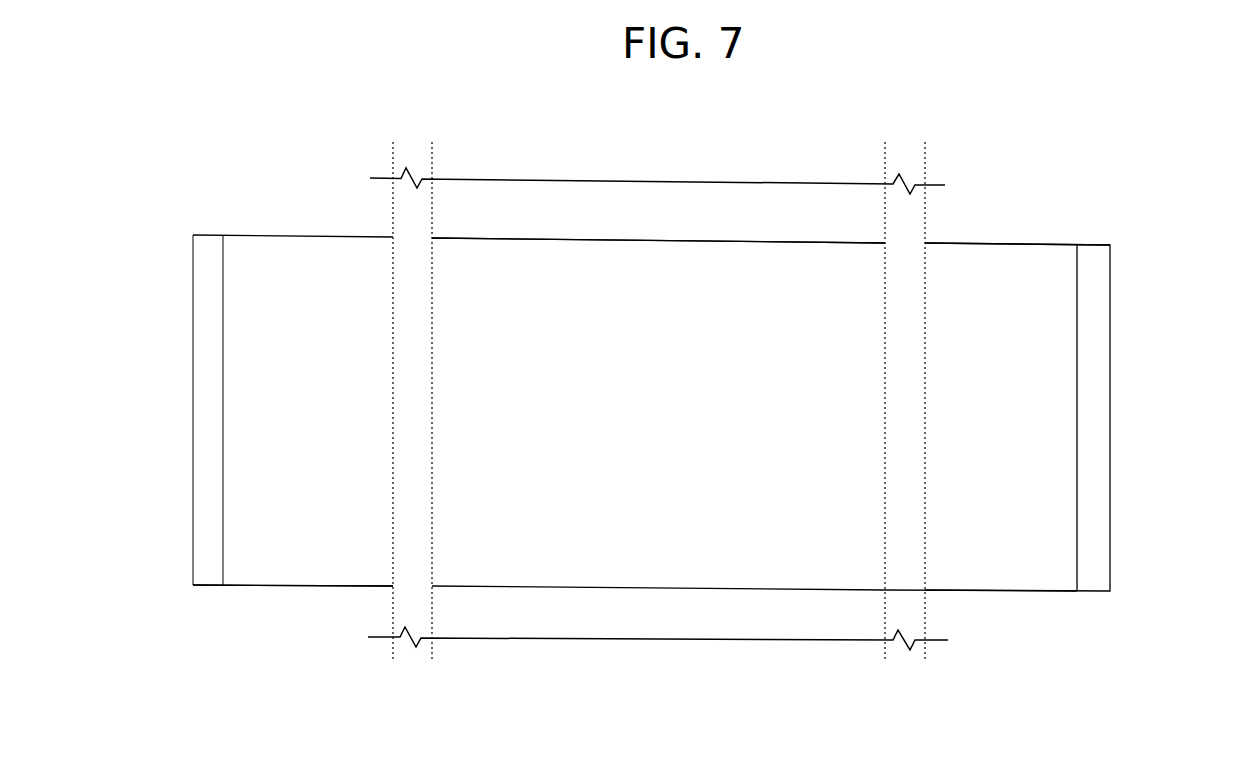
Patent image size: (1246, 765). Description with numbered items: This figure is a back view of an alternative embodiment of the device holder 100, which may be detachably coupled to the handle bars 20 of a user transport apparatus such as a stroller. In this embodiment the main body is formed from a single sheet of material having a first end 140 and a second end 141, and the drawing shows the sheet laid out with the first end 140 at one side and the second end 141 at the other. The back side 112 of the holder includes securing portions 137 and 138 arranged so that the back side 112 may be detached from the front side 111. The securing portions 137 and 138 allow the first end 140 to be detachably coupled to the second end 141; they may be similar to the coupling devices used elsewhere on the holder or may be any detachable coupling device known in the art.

The device holder 100 is at (1139, 235).
The front side 111 is at (697, 240).
The back side 112 is at (1010, 263).
The handle bars 20 is at (393, 207).
The securing portion 137 is at (203, 568).
The securing portion 138 is at (1088, 580).
The first end 140 is at (291, 592).
The second end 141 is at (1013, 603).